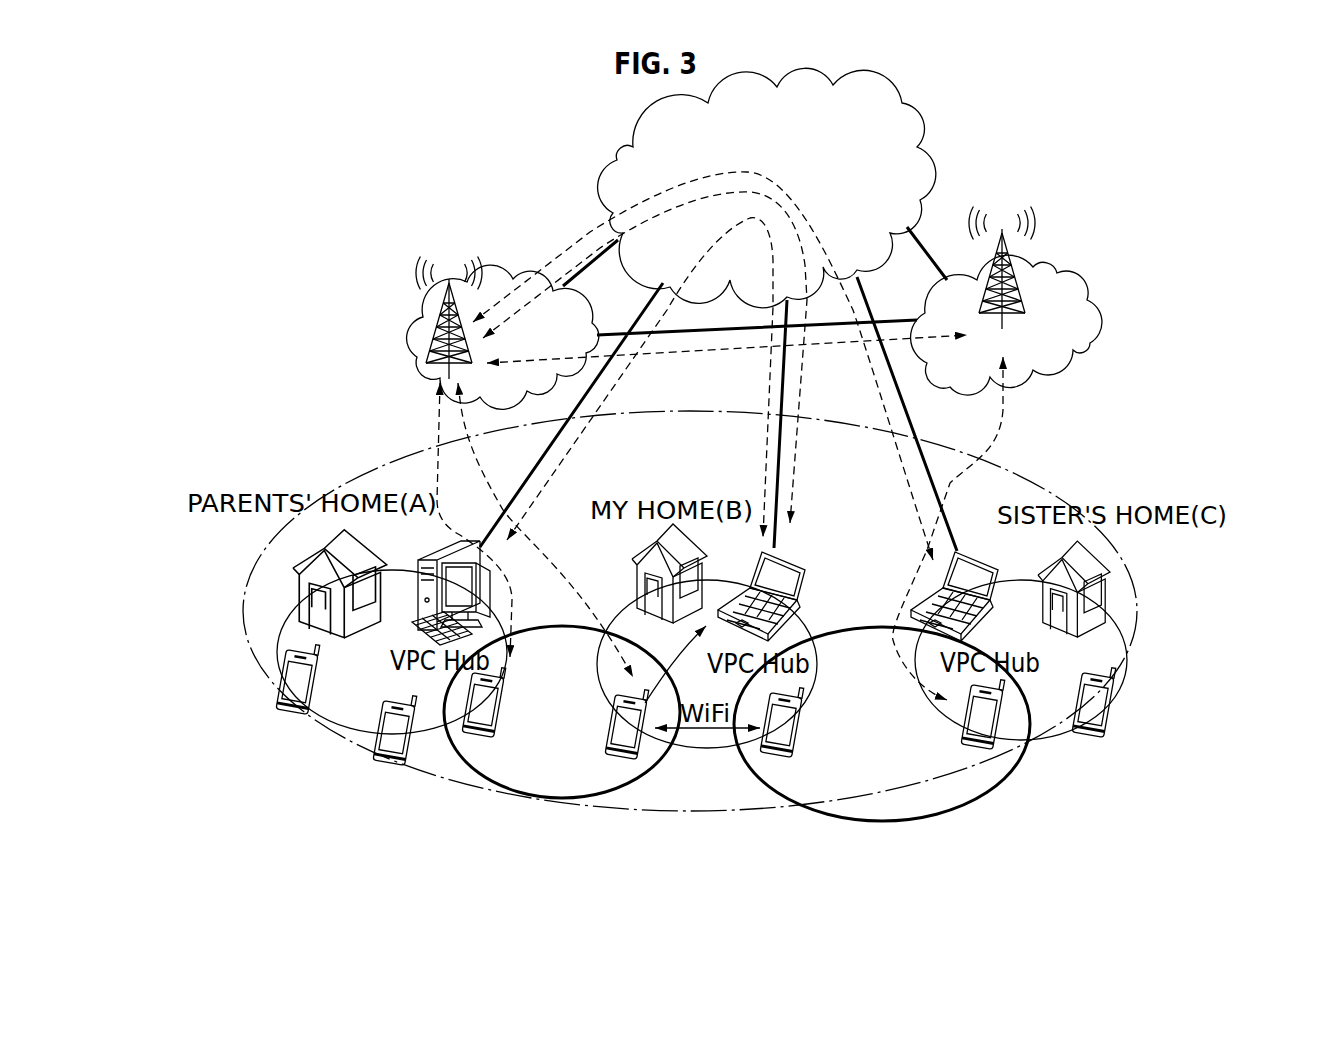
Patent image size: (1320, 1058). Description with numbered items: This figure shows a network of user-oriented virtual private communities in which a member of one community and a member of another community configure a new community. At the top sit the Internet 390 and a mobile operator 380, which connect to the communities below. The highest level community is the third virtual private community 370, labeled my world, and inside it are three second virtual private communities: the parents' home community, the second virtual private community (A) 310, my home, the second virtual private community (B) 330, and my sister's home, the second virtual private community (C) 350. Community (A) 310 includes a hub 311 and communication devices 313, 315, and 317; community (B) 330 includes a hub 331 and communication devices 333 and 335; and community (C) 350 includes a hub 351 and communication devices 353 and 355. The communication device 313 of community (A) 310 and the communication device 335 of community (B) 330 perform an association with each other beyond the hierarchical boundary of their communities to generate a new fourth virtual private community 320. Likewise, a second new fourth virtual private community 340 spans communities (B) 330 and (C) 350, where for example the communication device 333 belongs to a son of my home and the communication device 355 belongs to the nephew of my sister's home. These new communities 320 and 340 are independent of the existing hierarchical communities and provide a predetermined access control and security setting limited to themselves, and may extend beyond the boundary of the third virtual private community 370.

The Internet 390 is at (616, 157).
The mobile operator 380 is at (410, 272).
The third virtual private community 370 is at (980, 468).
The second virtual private community (A) 310 is at (437, 733).
The hub 311 is at (495, 582).
The communication device 313 is at (503, 690).
The communication device 315 is at (377, 727).
The communication device 317 is at (280, 673).
The fourth virtual private community 320 is at (603, 800).
The second virtual private community (B) 330 is at (700, 750).
The hub 331 is at (783, 557).
The communication device 333 is at (800, 720).
The communication device 335 is at (608, 720).
The fourth virtual private community 340 is at (883, 821).
The second virtual private community (C) 350 is at (1130, 650).
The hub 351 is at (935, 590).
The communication device 353 is at (1113, 713).
The communication device 355 is at (1003, 750).